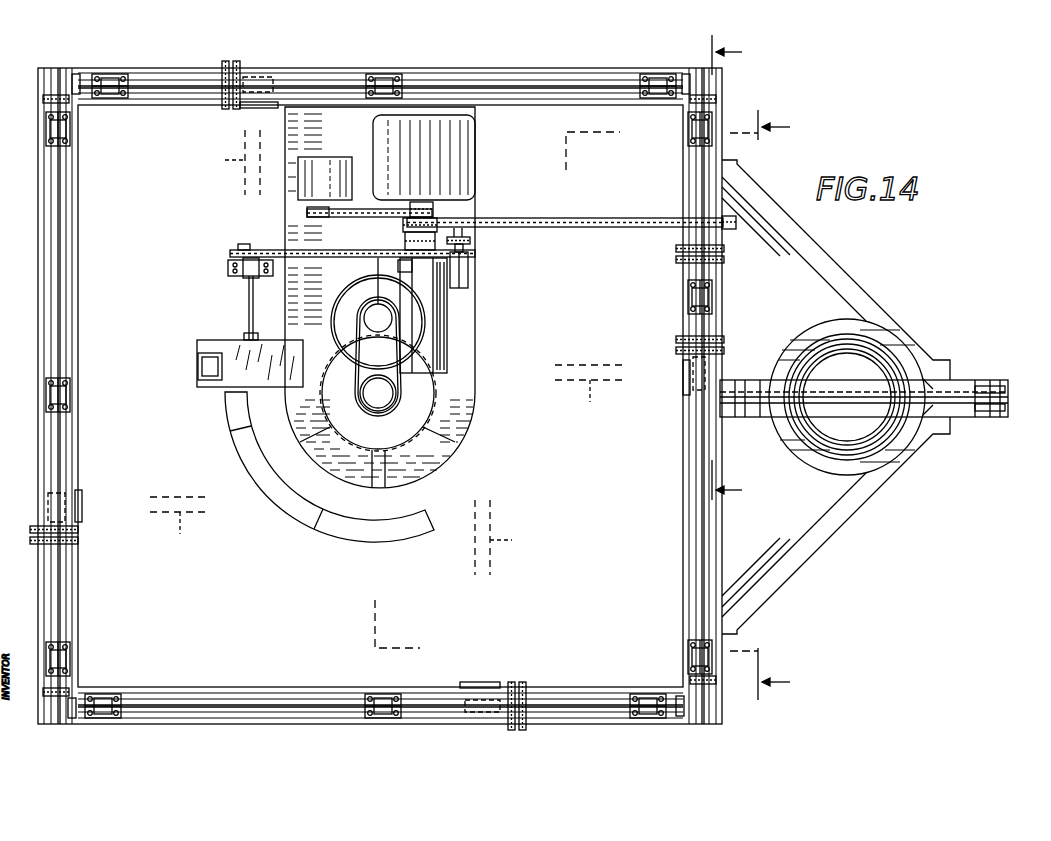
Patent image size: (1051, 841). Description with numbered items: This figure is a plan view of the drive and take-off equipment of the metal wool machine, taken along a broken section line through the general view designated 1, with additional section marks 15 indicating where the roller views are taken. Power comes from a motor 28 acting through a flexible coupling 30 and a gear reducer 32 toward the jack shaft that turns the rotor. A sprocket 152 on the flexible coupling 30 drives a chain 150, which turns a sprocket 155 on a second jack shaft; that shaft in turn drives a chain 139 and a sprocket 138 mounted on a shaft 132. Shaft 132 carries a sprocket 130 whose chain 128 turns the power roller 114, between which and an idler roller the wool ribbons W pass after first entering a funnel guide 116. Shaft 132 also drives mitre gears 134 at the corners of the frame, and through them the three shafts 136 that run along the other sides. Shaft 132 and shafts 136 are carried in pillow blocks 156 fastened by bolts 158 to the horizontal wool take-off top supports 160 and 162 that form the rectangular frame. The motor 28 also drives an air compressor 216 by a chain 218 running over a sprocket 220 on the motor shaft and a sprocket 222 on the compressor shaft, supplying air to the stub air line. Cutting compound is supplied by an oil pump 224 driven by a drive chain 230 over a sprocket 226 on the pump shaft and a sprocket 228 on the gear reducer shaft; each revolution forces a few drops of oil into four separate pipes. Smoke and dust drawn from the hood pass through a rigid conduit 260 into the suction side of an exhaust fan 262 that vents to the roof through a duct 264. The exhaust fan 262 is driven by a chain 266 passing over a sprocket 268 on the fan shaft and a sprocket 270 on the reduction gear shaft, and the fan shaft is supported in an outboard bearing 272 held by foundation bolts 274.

The drive shaft 1 is at (424, 396).
The section line 15 is at (731, 263).
The motor 28 is at (464, 158).
The flexible coupling 30 is at (406, 240).
The gear reducer 32 is at (436, 314).
The roller 114 is at (262, 78).
The funnel guide 116 is at (254, 108).
The chain 128 is at (236, 64).
The sprocket 130 is at (224, 66).
The shaft 132 is at (706, 521).
The mitre gears 134 is at (68, 712).
The shafts 136 is at (162, 86).
The sprocket 138 is at (724, 262).
The chain 139 is at (678, 255).
The chain 150 is at (574, 220).
The sprocket 152 is at (404, 225).
The sprocket 155 is at (728, 228).
The pillow blocks 156 is at (388, 76).
The bolts 158 is at (372, 74).
The horizontal wool take-off top support 160 is at (80, 430).
The horizontal wool take-off top support 162 is at (538, 72).
The air compressor 216 is at (326, 168).
The chain 218 is at (354, 218).
The sprocket 220 is at (440, 204).
The sprocket 222 is at (310, 218).
The oil pump 224 is at (468, 272).
The sprocket 226 is at (472, 240).
The sprocket 228 is at (398, 264).
The drive chain 230 is at (438, 250).
The rigid conduit 260 is at (306, 508).
The exhaust fan 262 is at (232, 344).
The duct 264 is at (200, 366).
The chain 266 is at (290, 258).
The sprocket 268 is at (246, 250).
The sprocket 270 is at (470, 232).
The outboard bearing 272 is at (228, 270).
The foundation bolts 274 is at (260, 276).
The ribbons W is at (387, 389).